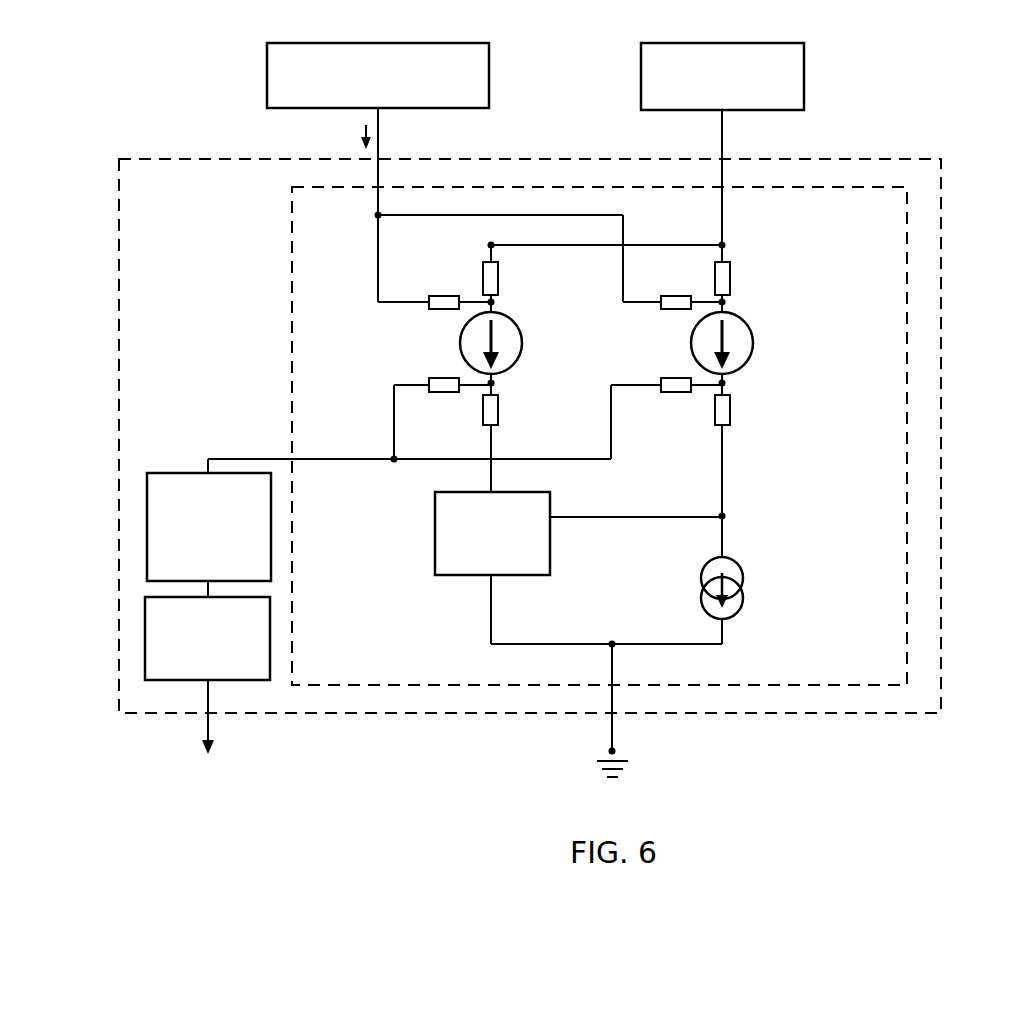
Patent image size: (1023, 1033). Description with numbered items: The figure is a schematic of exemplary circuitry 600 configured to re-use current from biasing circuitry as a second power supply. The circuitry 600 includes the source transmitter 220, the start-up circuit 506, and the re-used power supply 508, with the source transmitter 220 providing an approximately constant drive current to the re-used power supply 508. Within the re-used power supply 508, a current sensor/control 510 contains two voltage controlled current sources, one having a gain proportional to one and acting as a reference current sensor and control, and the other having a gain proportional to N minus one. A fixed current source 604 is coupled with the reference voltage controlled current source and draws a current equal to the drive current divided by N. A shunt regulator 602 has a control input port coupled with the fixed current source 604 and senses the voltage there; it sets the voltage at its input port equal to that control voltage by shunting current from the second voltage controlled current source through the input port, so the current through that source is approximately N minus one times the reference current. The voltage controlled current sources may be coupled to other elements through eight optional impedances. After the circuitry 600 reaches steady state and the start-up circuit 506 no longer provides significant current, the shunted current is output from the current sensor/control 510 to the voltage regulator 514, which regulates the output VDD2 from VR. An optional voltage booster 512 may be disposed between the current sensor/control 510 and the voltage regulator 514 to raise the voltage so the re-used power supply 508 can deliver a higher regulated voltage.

The circuitry 600 is at (70, 82).
The source transmitter 220 is at (378, 75).
The start-up circuit 506 is at (722, 76).
The re-used power supply 508 is at (942, 420).
The current sensor/control 510 is at (292, 505).
The voltage booster 512 is at (209, 527).
The voltage regulator 514 is at (207, 638).
The shunt regulator 602 is at (492, 533).
The fixed current source 604 is at (699, 588).